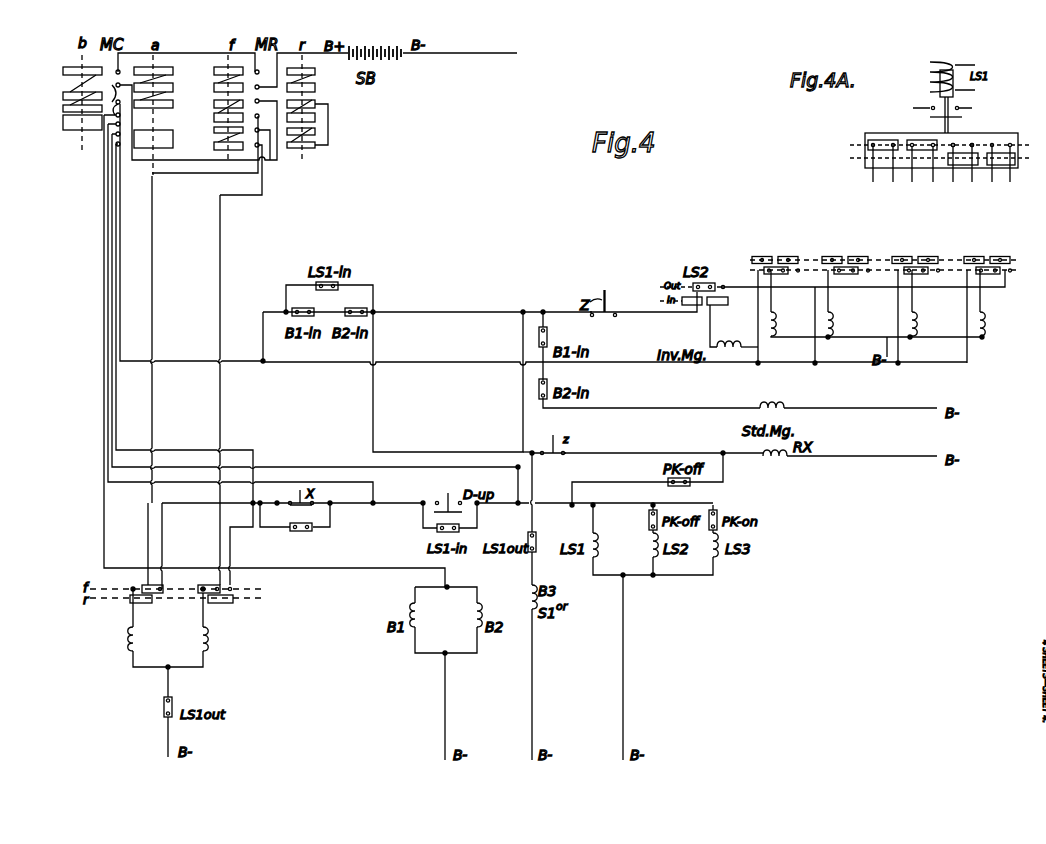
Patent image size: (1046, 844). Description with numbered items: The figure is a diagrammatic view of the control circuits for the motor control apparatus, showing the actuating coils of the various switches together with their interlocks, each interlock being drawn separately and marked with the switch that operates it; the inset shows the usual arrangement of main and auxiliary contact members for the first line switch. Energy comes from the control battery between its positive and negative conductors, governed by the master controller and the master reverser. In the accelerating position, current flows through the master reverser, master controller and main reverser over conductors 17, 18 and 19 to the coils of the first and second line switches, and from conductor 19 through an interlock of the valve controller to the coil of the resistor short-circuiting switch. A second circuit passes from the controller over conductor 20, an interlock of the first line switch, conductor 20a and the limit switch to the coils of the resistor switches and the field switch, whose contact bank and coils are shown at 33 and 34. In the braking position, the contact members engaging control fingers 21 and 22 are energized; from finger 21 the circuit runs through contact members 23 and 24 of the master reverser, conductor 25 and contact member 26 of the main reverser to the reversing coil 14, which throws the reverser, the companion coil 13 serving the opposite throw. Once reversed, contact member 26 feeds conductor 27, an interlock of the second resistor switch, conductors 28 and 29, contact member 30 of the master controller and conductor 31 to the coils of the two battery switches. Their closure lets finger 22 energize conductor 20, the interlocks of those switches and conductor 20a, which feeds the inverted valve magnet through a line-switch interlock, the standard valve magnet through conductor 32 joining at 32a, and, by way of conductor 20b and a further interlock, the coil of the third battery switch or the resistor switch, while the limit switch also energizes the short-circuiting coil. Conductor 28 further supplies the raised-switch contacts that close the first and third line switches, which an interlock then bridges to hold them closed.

In FIG. 4, the coil 13 is at (133, 640).
In FIG. 4, the reversing coil 14 is at (209, 644).
In FIG. 4, the conductor 17 is at (158, 415).
In FIG. 4, the conductor 18 is at (118, 300).
In FIG. 4, the conductor 19 is at (112, 297).
In FIG. 4, the conductor 20 is at (122, 186).
In FIG. 4A, the conductor 20 is at (955, 143).
In FIG. 4, the conductor 20a is at (498, 312).
In FIG. 4A, the conductor 20a is at (975, 143).
In FIG. 4, the conductor 20b is at (373, 400).
In FIG. 4, the control finger 21 is at (96, 86).
In FIG. 4, the control finger 22 is at (126, 106).
In FIG. 4, the contact member 23 is at (214, 147).
In FIG. 4, the contact member 24 is at (214, 127).
In FIG. 4, the conductor 25 is at (221, 235).
In FIG. 4, the contact member 26 is at (218, 603).
In FIG. 4, the conductor 27 is at (243, 544).
In FIG. 4, the conductor 28 is at (364, 504).
In FIG. 4A, the conductor 28 is at (1016, 162).
In FIG. 4, the conductor 29 is at (103, 415).
In FIG. 4, the contact member 30 is at (63, 124).
In FIG. 4, the conductor 31 is at (104, 187).
In FIG. 4, the conductor 32 is at (676, 404).
In FIG. 4, the conductor 32a is at (523, 413).
In FIG. 4, the relay contacts 33 is at (870, 254).
In FIG. 4, the relay coils 34 is at (808, 291).